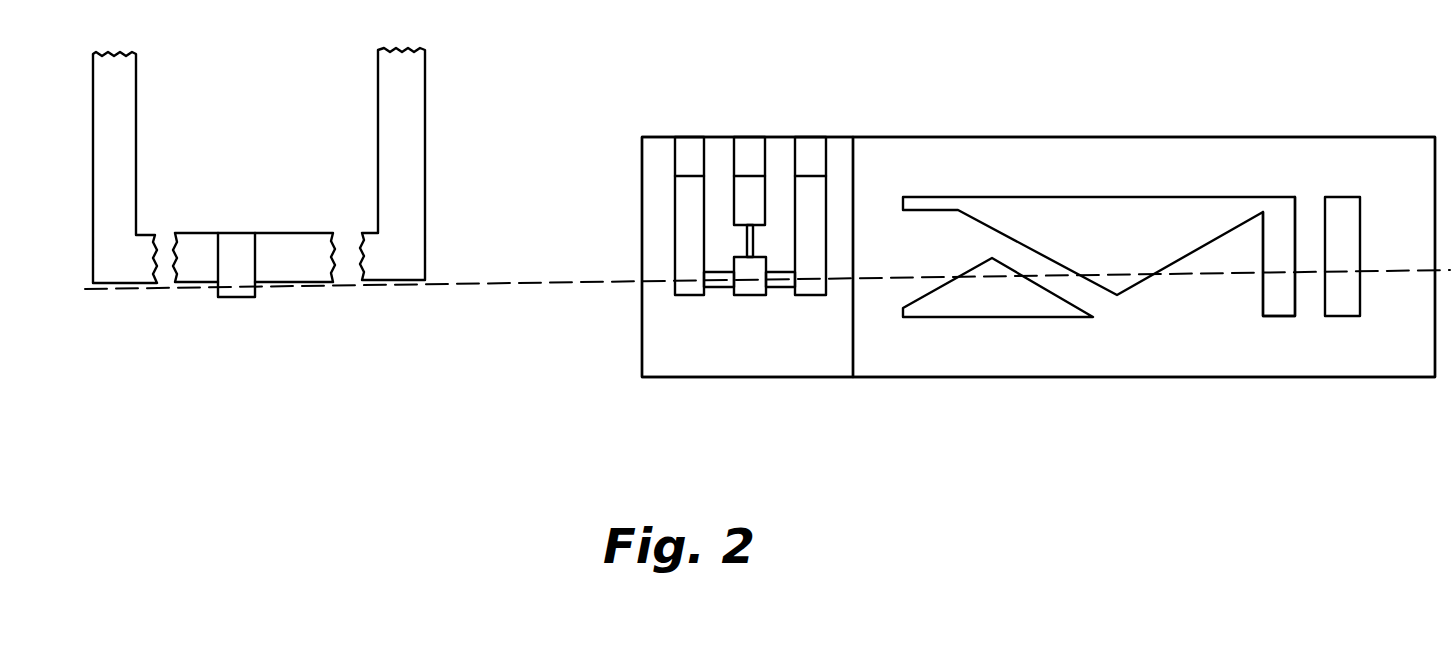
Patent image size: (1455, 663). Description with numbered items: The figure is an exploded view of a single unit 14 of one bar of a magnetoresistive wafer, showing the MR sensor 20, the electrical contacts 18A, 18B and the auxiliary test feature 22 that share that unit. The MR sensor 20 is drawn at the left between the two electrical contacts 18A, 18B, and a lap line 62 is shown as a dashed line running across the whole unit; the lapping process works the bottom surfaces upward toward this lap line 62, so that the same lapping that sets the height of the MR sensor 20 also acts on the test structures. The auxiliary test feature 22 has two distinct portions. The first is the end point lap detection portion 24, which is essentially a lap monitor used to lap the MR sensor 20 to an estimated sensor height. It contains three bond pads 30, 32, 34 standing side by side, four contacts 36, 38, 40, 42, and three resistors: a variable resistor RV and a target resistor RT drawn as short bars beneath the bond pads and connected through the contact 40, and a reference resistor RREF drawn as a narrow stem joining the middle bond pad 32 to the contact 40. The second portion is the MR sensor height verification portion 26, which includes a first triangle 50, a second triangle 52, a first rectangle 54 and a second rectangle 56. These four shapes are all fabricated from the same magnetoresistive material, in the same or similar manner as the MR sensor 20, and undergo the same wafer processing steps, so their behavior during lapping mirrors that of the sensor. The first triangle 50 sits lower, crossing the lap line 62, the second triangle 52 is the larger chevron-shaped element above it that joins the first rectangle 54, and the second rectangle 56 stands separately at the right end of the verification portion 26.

The unit 14 is at (524, 114).
The electrical contact 18A is at (128, 166).
The electrical contact 18B is at (412, 166).
The MR sensor 20 is at (236, 297).
The auxiliary test feature 22 is at (915, 138).
The end point lap detection portion 24 is at (655, 137).
The MR sensor height verification portion 26 is at (1168, 138).
The bond pad 30 is at (683, 143).
The bond pad 32 is at (748, 143).
The bond pad 34 is at (805, 143).
The contact 36 is at (683, 202).
The contact 38 is at (753, 215).
The contact 40 is at (755, 296).
The contact 42 is at (815, 207).
The first triangle 50 is at (985, 259).
The second triangle 52 is at (1126, 240).
The first rectangle 54 is at (1285, 199).
The second rectangle 56 is at (1345, 198).
The lap line 62 is at (530, 287).
The reference resistor RREF is at (748, 237).
The variable resistor RV is at (720, 288).
The target resistor RT is at (781, 288).